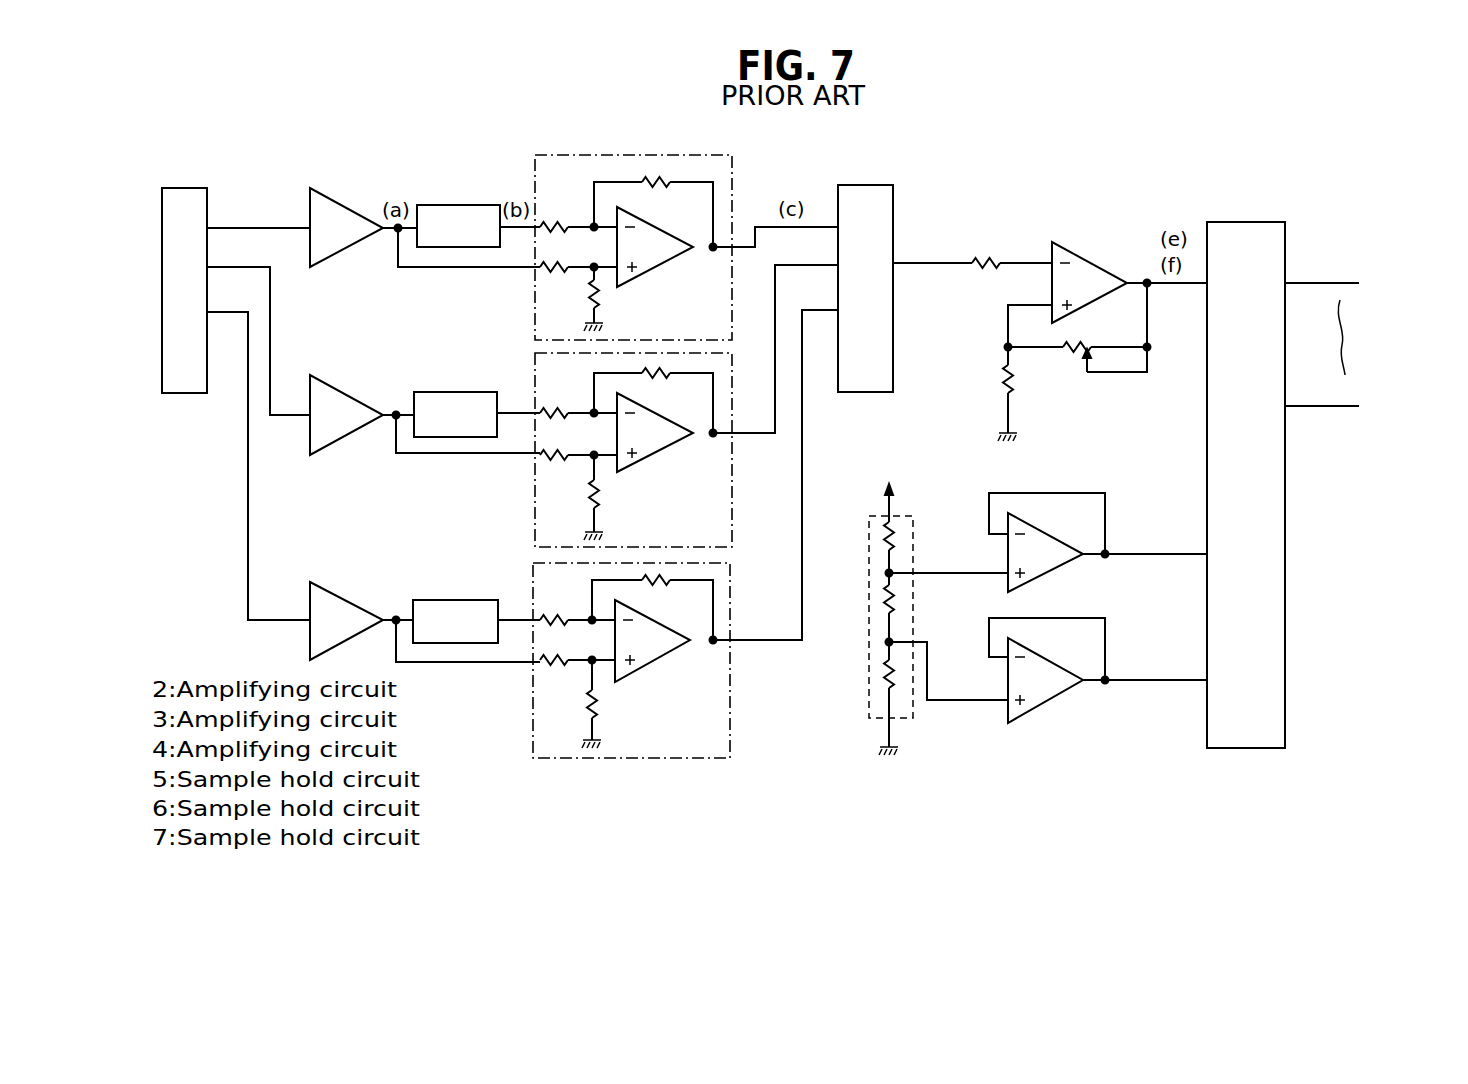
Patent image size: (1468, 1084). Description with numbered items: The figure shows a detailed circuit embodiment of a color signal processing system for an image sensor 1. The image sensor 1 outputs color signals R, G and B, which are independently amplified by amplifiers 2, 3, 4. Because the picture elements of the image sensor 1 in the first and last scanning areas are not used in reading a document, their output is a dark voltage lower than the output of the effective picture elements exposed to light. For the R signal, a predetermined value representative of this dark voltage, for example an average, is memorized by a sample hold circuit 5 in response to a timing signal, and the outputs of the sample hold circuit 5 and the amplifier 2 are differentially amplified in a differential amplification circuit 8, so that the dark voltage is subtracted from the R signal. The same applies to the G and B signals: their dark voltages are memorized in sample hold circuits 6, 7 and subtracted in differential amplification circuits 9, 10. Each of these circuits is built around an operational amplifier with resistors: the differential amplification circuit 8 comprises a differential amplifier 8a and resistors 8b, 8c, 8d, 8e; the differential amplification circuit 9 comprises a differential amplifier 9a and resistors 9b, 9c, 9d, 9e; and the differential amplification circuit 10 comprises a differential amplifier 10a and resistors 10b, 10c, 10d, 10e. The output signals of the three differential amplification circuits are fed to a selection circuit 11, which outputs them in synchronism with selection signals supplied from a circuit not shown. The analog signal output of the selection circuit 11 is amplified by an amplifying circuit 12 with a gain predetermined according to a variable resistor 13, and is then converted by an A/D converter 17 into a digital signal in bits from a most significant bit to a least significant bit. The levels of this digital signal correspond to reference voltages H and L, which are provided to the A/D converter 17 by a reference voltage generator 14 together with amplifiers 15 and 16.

The image sensor 1 is at (182, 189).
The amplifier 2 is at (334, 198).
The amplifier 3 is at (339, 386).
The amplifier 4 is at (337, 593).
The sample hold circuit 5 is at (450, 205).
The sample hold circuit 6 is at (452, 392).
The sample hold circuit 7 is at (458, 600).
The differential amplification circuit 8 is at (736, 188).
The differential amplifier 8a is at (655, 270).
The resistor 8b is at (646, 187).
The resistor 8c is at (552, 220).
The resistor 8d is at (557, 275).
The resistor 8e is at (605, 297).
The differential amplification circuit 9 is at (633, 450).
The differential amplifier 9a is at (668, 450).
The resistor 9b is at (653, 376).
The resistor 9c is at (552, 408).
The resistor 9d is at (557, 464).
The resistor 9e is at (595, 497).
The differential amplification circuit 10 is at (631, 660).
The differential amplifier 10a is at (652, 658).
The resistor 10b is at (643, 580).
The resistor 10c is at (552, 613).
The resistor 10d is at (551, 665).
The resistor 10e is at (595, 705).
The selection circuit 11 is at (852, 185).
The amplifying circuit 12 is at (1084, 258).
The variable resistor 13 is at (1075, 361).
The reference voltage generator 14 is at (868, 648).
The amplifier 15 is at (1055, 570).
The amplifier 16 is at (1053, 698).
The A/D converter 17 is at (1236, 222).